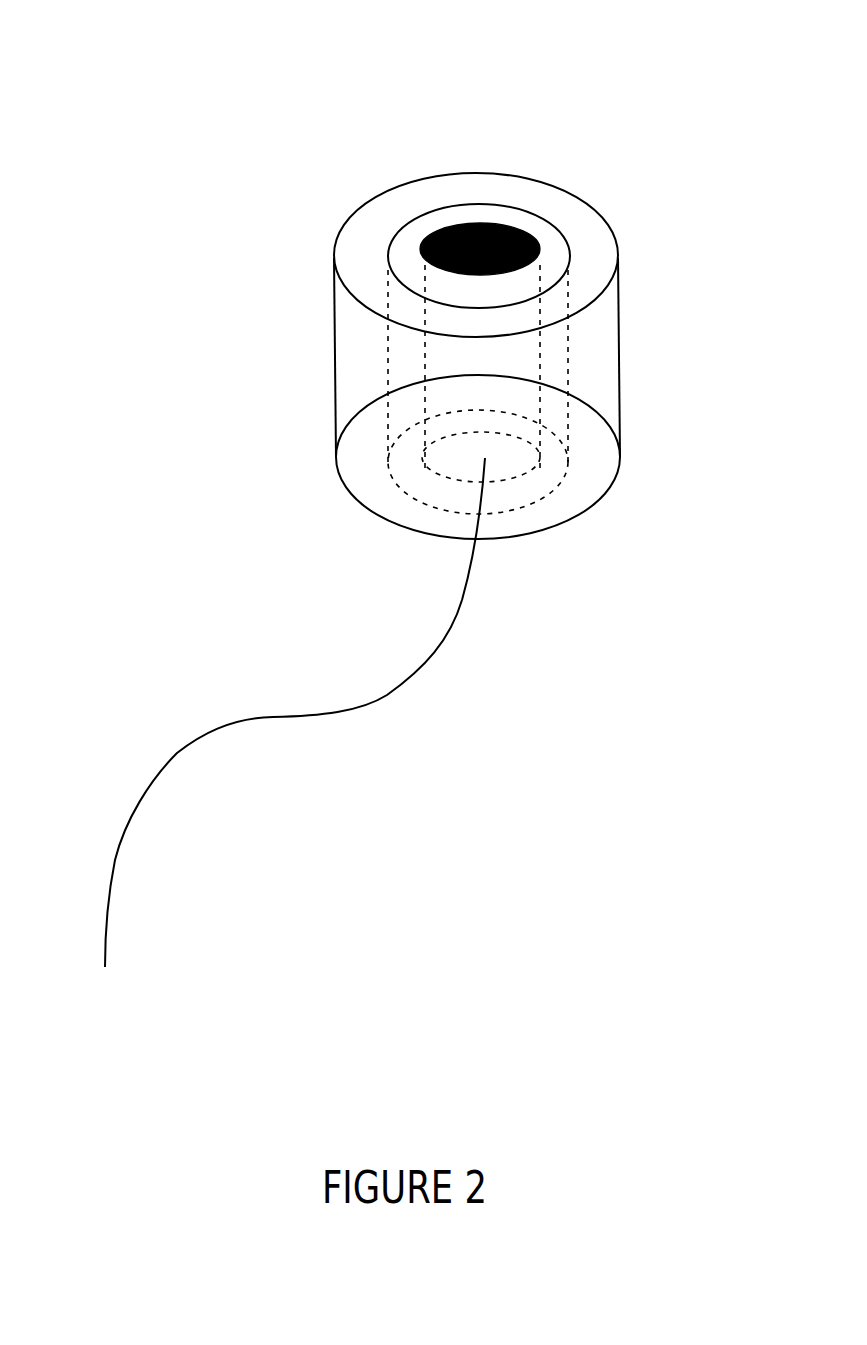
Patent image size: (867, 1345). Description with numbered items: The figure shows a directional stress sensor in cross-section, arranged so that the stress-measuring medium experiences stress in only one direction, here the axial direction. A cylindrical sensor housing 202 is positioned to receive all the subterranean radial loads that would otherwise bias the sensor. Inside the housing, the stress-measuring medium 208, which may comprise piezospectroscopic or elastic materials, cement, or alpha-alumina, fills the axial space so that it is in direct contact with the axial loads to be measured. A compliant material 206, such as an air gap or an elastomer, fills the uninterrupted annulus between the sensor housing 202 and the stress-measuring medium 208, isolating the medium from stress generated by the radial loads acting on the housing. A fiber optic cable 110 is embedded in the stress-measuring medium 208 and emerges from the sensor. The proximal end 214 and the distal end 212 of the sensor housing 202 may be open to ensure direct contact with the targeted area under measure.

The fiber optic cable 110 is at (353, 710).
The sensor housing 202 is at (333, 385).
The compliant material 206 is at (413, 232).
The stress-measuring medium 208 is at (495, 225).
The distal end 212 is at (535, 560).
The proximal end 214 is at (557, 152).